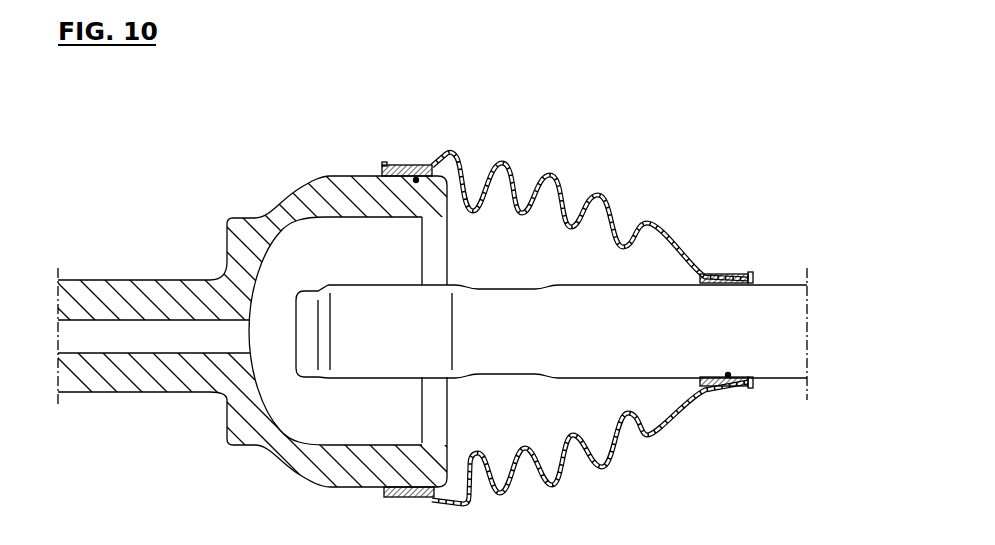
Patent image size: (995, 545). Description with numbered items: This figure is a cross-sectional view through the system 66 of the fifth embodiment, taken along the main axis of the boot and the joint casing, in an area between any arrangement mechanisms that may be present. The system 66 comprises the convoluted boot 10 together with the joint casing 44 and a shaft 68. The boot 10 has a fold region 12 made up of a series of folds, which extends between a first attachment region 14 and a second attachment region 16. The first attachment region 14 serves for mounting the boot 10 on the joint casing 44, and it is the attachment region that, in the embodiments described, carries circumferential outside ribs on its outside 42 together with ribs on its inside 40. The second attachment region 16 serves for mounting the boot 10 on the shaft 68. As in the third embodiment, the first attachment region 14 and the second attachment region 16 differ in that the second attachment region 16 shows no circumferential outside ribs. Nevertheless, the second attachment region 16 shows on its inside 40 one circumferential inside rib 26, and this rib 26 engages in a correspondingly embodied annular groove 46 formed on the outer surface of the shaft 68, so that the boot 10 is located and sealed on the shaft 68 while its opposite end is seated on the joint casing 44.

The convoluted boot 10 is at (551, 233).
The fold region 12 is at (513, 151).
The first attachment region 14 is at (408, 125).
The second attachment region 16 is at (735, 221).
The circumferential inside rib 26 is at (412, 180).
The inside 40 is at (551, 263).
The outside 42 is at (665, 173).
The joint casing 44 is at (181, 189).
The annular groove 46 is at (420, 185).
The system 66 is at (258, 110).
The shaft 68 is at (787, 318).